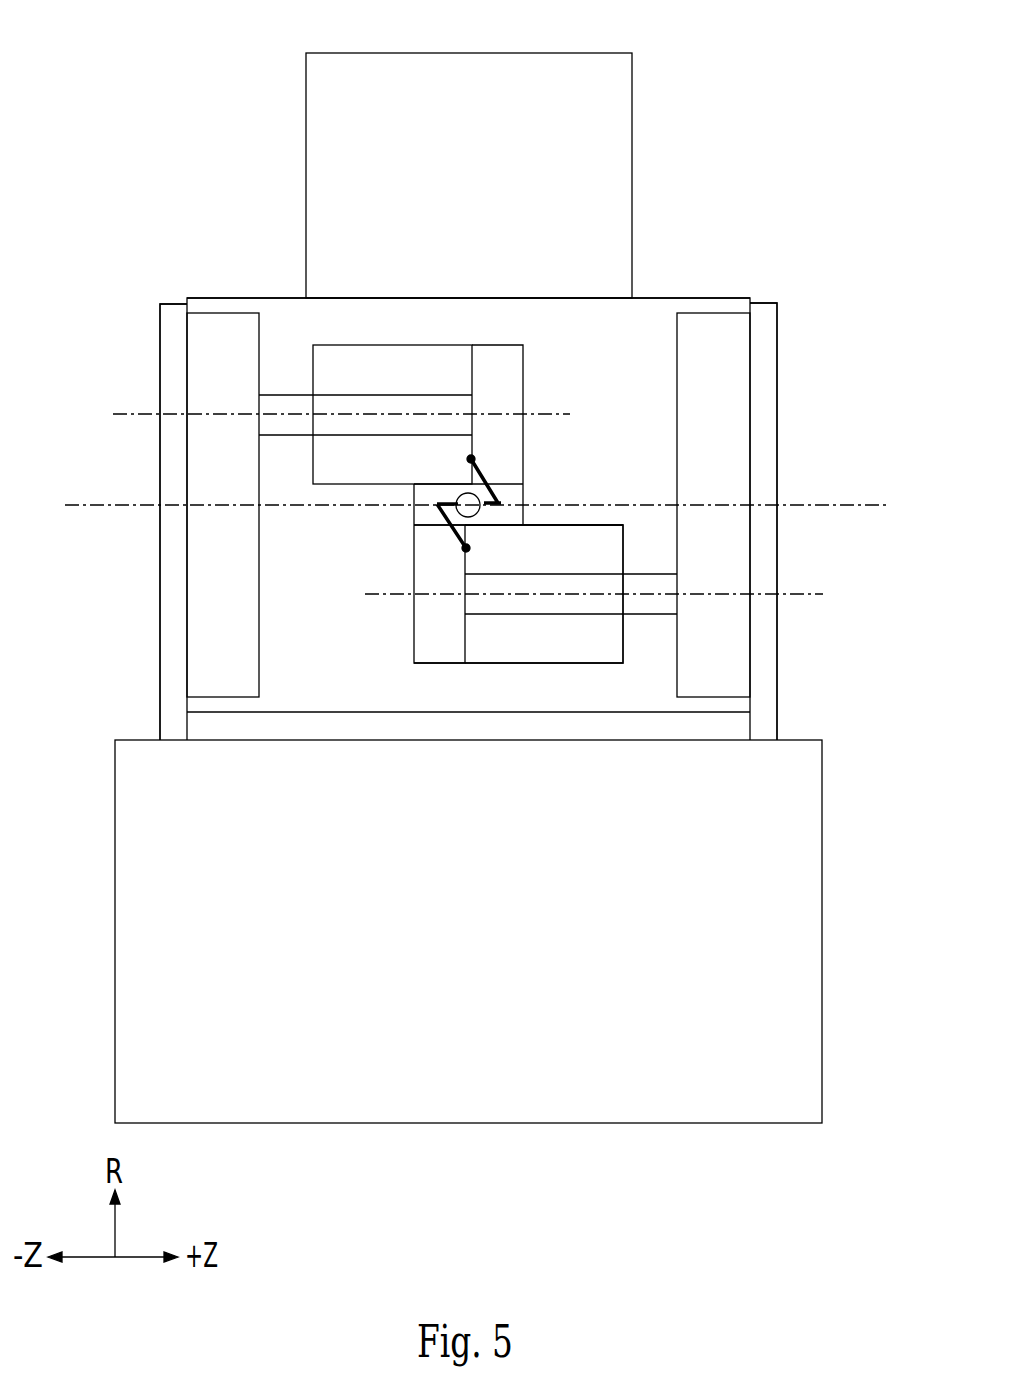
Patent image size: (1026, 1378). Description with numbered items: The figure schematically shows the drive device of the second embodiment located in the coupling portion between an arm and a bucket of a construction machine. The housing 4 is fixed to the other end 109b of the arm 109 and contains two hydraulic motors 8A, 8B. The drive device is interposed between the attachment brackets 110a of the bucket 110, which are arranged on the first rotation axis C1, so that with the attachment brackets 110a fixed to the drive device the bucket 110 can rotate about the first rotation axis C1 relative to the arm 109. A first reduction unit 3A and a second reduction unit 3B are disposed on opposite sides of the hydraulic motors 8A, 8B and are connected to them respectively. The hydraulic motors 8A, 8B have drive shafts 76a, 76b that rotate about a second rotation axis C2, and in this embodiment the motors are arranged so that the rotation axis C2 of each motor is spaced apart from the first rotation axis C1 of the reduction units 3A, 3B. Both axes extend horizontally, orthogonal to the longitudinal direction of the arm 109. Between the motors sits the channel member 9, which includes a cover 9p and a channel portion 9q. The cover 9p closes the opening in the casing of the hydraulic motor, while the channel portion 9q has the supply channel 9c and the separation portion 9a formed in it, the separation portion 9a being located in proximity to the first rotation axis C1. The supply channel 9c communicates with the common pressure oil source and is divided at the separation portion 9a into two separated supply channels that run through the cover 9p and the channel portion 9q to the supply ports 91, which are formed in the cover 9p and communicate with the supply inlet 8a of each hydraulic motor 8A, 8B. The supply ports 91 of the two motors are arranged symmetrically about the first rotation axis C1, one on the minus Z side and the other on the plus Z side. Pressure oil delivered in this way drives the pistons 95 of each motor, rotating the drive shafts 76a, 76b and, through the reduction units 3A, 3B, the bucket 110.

The first reduction unit 3A is at (750, 393).
The second reduction unit 3B is at (193, 443).
The housing 4 is at (745, 298).
The hydraulic motor 8A is at (545, 663).
The hydraulic motor 8B is at (445, 345).
The supply inlet 8a is at (475, 457).
The channel member 9 is at (479, 496).
The separation portion 9a is at (508, 573).
The supply channel 9c is at (478, 520).
The cover 9p is at (525, 387).
The channel portion 9q is at (525, 515).
The drive shaft 76a is at (650, 615).
The drive shaft 76b is at (285, 393).
The supply port 91 is at (466, 489).
The piston 95 is at (485, 482).
The arm 109 is at (556, 175).
The other end of the arm 109b is at (632, 237).
The bucket 110 is at (822, 775).
The attachment bracket 110a is at (160, 677).
The first rotation axis C1 is at (880, 507).
The second rotation axis C2 is at (133, 412).